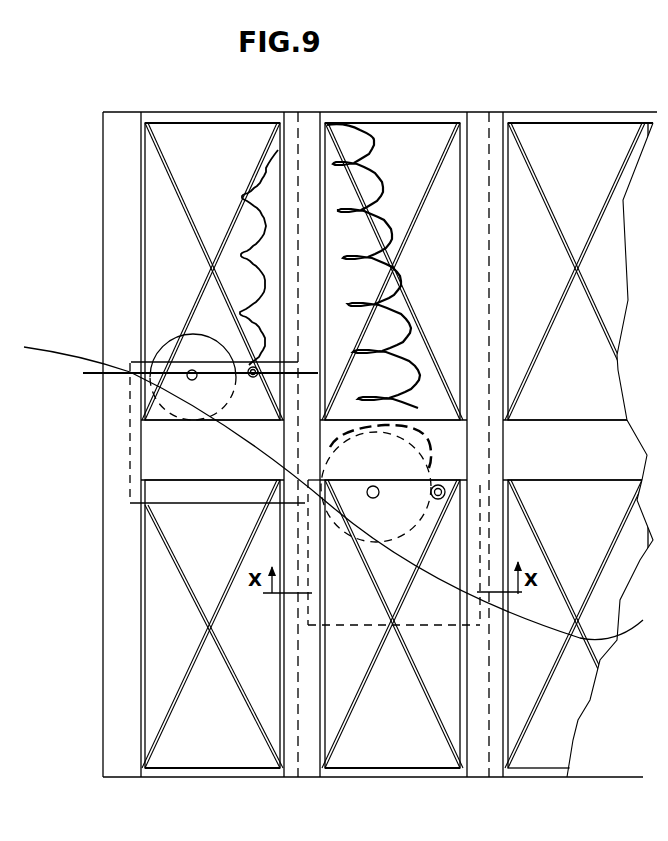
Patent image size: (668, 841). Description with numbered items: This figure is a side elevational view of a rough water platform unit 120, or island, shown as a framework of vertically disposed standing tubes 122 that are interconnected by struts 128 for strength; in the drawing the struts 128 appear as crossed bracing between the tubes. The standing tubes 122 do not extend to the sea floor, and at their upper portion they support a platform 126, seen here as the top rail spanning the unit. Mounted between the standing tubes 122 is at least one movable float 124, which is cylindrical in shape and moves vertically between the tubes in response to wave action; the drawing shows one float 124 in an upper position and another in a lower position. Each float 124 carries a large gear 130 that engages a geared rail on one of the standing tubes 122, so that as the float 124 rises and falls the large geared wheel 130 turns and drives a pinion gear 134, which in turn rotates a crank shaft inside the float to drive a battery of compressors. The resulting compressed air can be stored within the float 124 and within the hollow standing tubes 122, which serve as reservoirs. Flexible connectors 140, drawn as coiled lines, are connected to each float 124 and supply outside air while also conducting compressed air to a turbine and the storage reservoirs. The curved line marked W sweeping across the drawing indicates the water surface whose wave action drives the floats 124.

The rough water platform unit 120 is at (340, 79).
The standing tubes 122 is at (318, 112).
The movable float 124 is at (220, 498).
The platform 126 is at (537, 112).
The struts 128 is at (181, 199).
The large gear 130 is at (165, 333).
The pinion gear 134 is at (252, 345).
The flexible connectors 140 is at (244, 264).
The web W is at (57, 345).